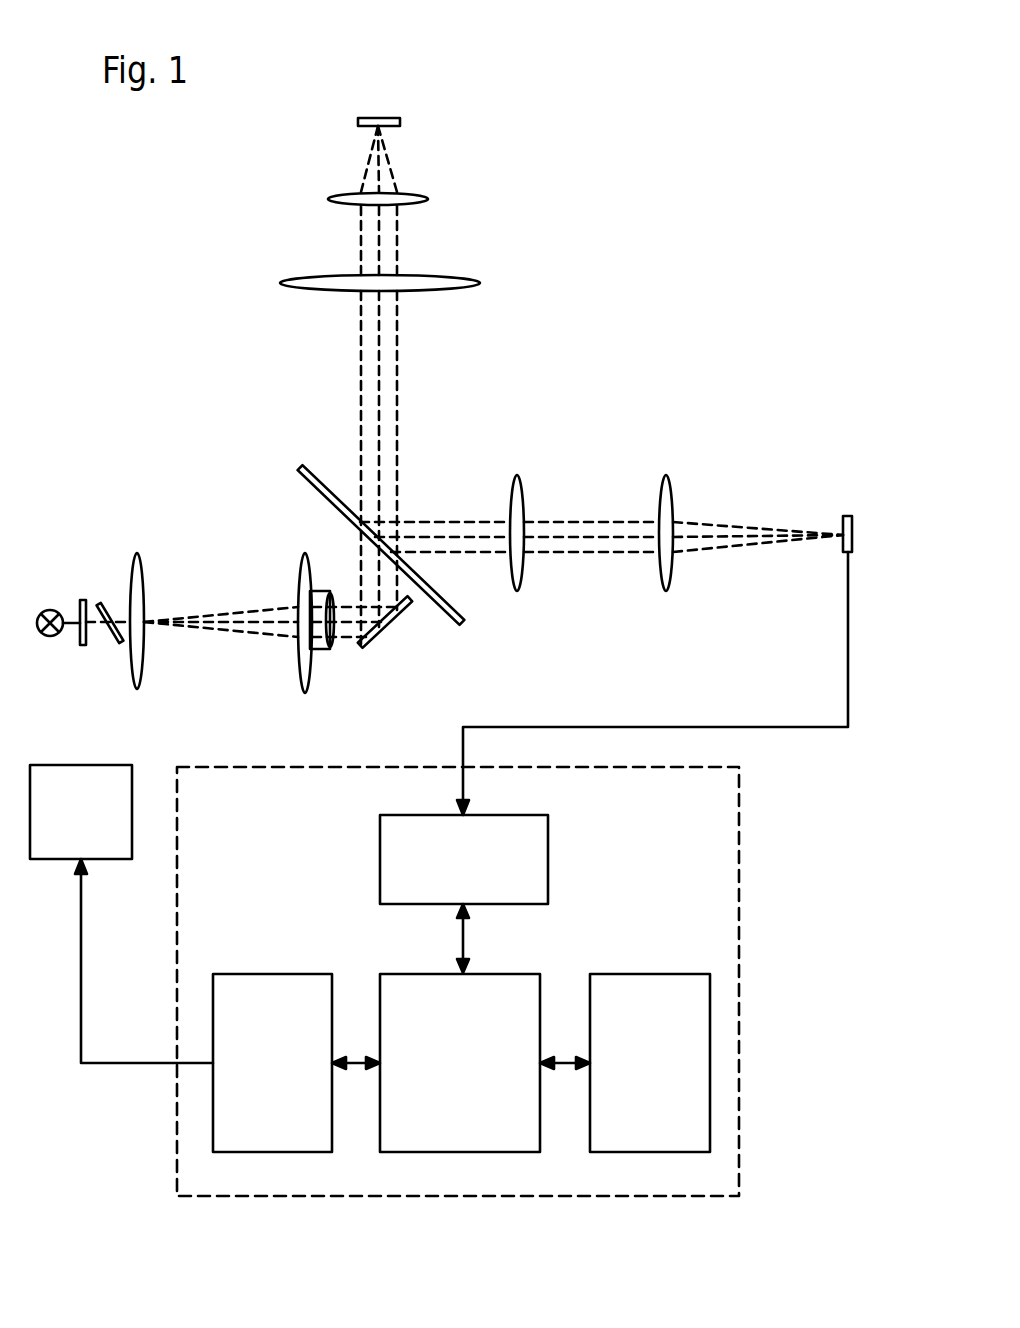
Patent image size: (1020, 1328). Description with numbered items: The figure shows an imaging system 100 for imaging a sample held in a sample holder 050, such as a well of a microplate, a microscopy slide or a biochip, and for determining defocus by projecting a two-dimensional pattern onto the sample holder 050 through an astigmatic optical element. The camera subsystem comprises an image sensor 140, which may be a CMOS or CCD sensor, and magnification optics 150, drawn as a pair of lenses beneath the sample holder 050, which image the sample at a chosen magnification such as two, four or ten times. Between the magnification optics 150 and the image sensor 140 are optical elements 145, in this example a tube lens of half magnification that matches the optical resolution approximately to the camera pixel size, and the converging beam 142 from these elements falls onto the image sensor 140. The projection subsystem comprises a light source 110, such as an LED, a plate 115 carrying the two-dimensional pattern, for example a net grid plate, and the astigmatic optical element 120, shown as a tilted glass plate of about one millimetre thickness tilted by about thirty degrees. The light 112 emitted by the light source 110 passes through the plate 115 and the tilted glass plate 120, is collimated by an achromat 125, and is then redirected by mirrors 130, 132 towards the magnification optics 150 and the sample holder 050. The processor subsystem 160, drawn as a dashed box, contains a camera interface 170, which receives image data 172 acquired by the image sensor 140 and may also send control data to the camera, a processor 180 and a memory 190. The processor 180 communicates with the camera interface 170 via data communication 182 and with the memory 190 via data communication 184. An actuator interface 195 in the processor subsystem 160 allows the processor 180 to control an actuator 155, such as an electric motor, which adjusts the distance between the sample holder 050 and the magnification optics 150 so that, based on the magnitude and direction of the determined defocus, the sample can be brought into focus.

The sample holder 050 is at (400, 122).
The imaging system 100 is at (768, 208).
The light source 110 is at (45, 608).
The light 112 is at (233, 634).
The plate 115 is at (83, 646).
The astigmatic optical element 120 is at (100, 603).
The achromat 125 is at (297, 588).
The mirror 130 is at (432, 600).
The mirror 132 is at (378, 648).
The image sensor 140 is at (840, 523).
The focused light beam 142 is at (745, 543).
The optical elements 145 is at (677, 458).
The magnification optics 150 is at (500, 190).
The actuator 155 is at (100, 828).
The processor subsystem 160 is at (668, 850).
The camera interface 170 is at (483, 878).
The image data 172 is at (617, 725).
The processor 180 is at (480, 1079).
The data communication 182 is at (460, 930).
The data communication 184 is at (568, 1063).
The memory 190 is at (670, 1079).
The actuator interface 195 is at (292, 1079).